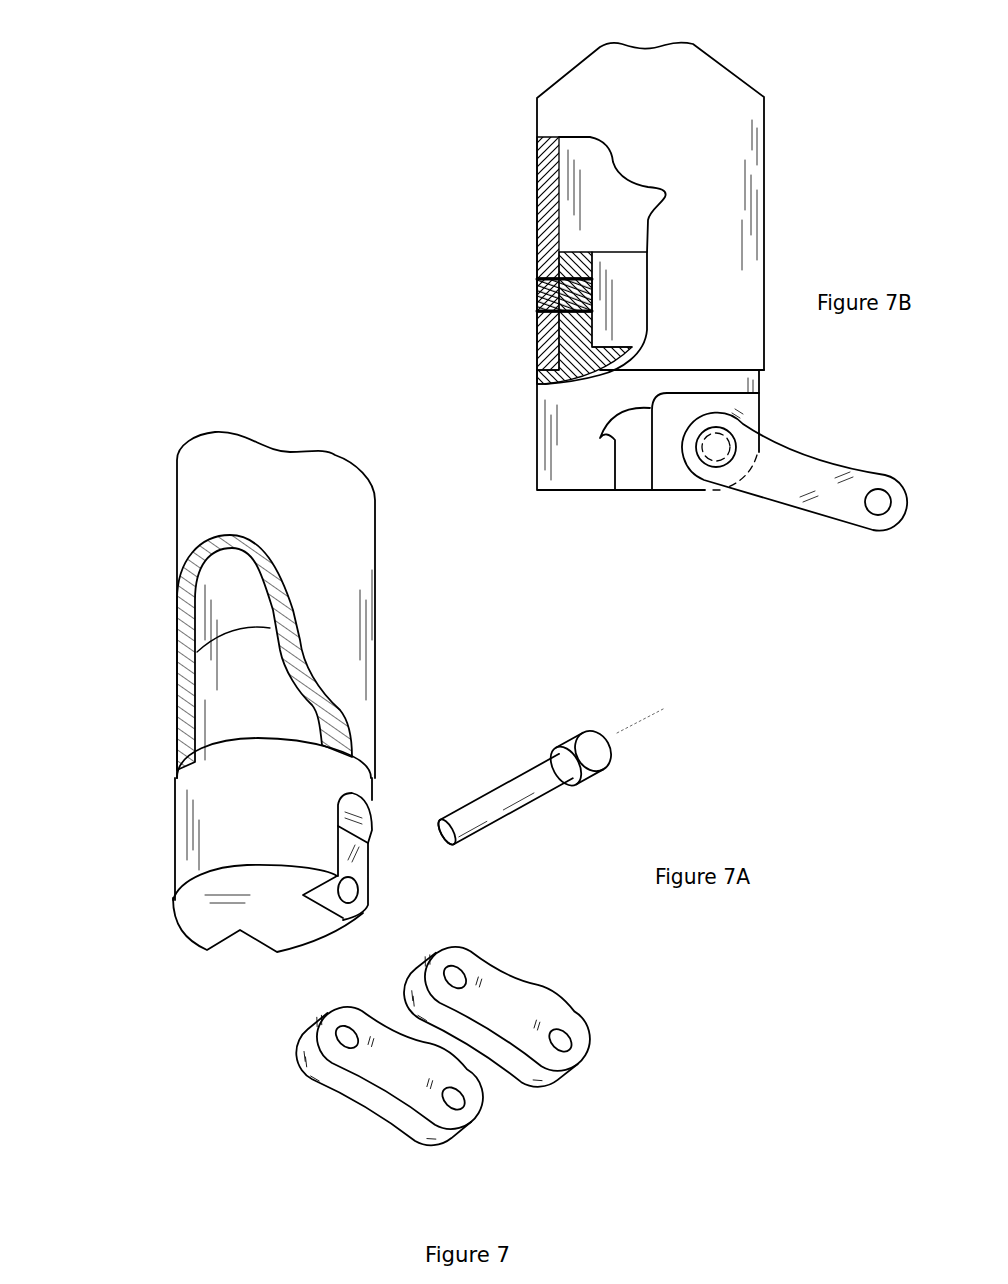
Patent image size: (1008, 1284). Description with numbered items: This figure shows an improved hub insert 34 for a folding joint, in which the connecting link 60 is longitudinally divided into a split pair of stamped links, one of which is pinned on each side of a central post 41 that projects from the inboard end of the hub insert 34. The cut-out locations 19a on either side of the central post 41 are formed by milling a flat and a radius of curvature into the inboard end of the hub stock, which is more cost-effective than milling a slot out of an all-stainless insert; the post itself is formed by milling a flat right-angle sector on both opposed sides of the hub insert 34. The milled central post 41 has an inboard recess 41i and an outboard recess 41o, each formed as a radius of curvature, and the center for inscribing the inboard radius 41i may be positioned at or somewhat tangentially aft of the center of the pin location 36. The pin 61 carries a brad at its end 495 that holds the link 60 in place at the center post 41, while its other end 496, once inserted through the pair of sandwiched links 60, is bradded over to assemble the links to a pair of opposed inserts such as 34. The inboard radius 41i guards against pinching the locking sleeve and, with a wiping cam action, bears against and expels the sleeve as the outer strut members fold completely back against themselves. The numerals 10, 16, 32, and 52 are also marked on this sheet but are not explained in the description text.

In FIG. 7, the base cap 10 is at (208, 927).
In FIG. 7, the wall 16 is at (177, 757).
In FIG. 7B, the wall 16 is at (537, 383).
In FIG. 7, the cut-out locations 19a is at (366, 842).
In FIG. 7B, the housing body 32 is at (720, 100).
In FIG. 7, the hub insert 34 is at (174, 886).
In FIG. 7B, the hub insert 34 is at (575, 478).
In FIG. 7, the pin location 36 is at (355, 895).
In FIG. 7, the central post 41 is at (280, 930).
In FIG. 7B, the outboard recess 41o is at (608, 492).
In FIG. 7B, the inboard recess 41i is at (762, 493).
In FIG. 7B, the threaded insert 52 is at (537, 287).
In FIG. 7, the connecting link 60 is at (460, 1140).
In FIG. 7B, the connecting link 60 is at (823, 505).
In FIG. 7A, the pin 61 is at (518, 787).
In FIG. 7A, the brad end 495 is at (593, 740).
In FIG. 7B, the brad end 495 is at (710, 466).
In FIG. 7A, the pin end 496 is at (440, 835).